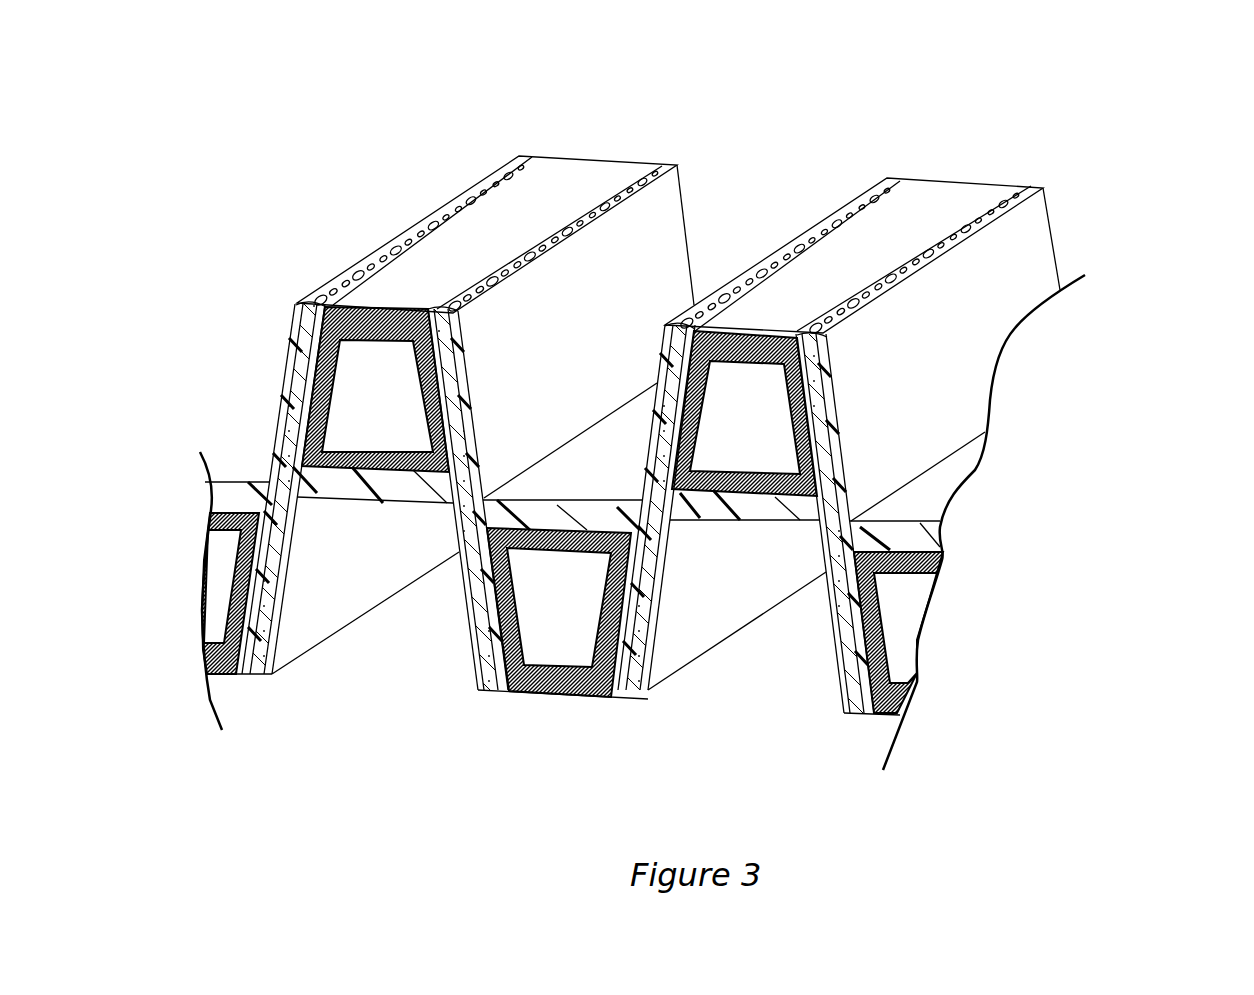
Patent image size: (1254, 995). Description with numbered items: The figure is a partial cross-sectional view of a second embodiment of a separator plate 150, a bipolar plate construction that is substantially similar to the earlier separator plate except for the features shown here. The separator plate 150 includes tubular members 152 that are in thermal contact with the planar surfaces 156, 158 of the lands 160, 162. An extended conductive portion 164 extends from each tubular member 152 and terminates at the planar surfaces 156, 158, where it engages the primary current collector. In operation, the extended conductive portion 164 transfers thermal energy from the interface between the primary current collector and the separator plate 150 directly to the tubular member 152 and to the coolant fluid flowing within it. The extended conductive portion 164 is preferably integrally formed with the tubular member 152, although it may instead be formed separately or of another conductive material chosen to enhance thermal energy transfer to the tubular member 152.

The separator plate 150 is at (1122, 155).
The tubular member 152 is at (317, 377).
The planar surface 156 is at (584, 170).
The planar surface 158 is at (232, 696).
The land 160 is at (672, 215).
The land 162 is at (322, 618).
The extended conductive portion 164 is at (353, 317).